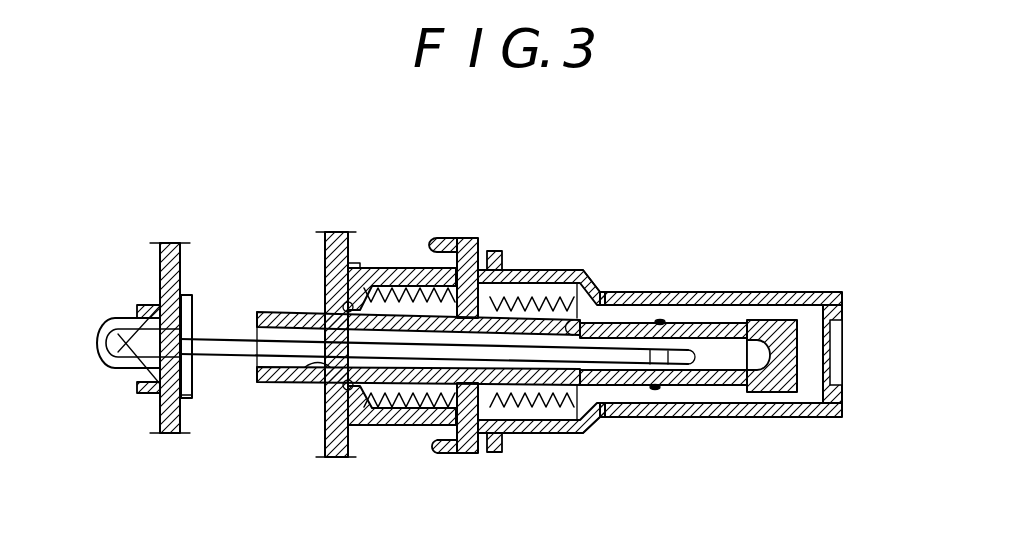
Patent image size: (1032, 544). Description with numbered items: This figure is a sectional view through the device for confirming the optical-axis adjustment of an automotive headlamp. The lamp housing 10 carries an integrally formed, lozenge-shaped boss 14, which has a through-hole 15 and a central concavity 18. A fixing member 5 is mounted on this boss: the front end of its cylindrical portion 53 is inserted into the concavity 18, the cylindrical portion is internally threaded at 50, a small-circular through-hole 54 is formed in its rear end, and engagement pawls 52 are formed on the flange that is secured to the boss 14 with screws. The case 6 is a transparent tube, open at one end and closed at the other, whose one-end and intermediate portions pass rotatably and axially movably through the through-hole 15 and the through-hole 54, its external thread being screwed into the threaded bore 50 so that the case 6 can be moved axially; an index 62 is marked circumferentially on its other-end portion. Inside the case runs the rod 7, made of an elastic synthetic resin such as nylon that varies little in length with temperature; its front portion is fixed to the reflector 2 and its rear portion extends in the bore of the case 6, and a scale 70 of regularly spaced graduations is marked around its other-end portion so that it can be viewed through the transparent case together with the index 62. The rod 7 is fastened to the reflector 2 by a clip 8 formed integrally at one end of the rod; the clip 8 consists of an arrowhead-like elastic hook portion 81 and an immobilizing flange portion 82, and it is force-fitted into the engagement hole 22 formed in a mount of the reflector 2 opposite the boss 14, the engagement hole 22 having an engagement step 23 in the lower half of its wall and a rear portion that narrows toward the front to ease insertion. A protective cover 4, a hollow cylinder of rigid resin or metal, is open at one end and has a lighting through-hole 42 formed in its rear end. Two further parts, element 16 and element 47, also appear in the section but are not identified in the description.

The reflector 2 is at (170, 243).
The protective cover 4 is at (612, 290).
The fixing member 5 is at (518, 271).
The case 6 is at (708, 320).
The rod 7 is at (609, 343).
The clip 8 is at (113, 312).
The lamp housing 10 is at (330, 231).
The boss 14 is at (387, 425).
The through-hole 15 is at (315, 363).
The O-ring 16 is at (342, 308).
The concavity 18 is at (400, 288).
The engagement hole 22 is at (133, 362).
The engagement step 23 is at (192, 380).
The lighting through-hole 42 is at (843, 386).
The tab 47 is at (445, 240).
The threaded bore 50 is at (408, 428).
The engagement pawls 52 is at (468, 238).
The cylindrical portion 53 is at (372, 267).
The small-circular through-hole 54 is at (594, 268).
The index 62 is at (657, 388).
The scale 70 is at (697, 367).
The elastic hook portion 81 is at (140, 304).
The immobilizing flange portion 82 is at (188, 295).